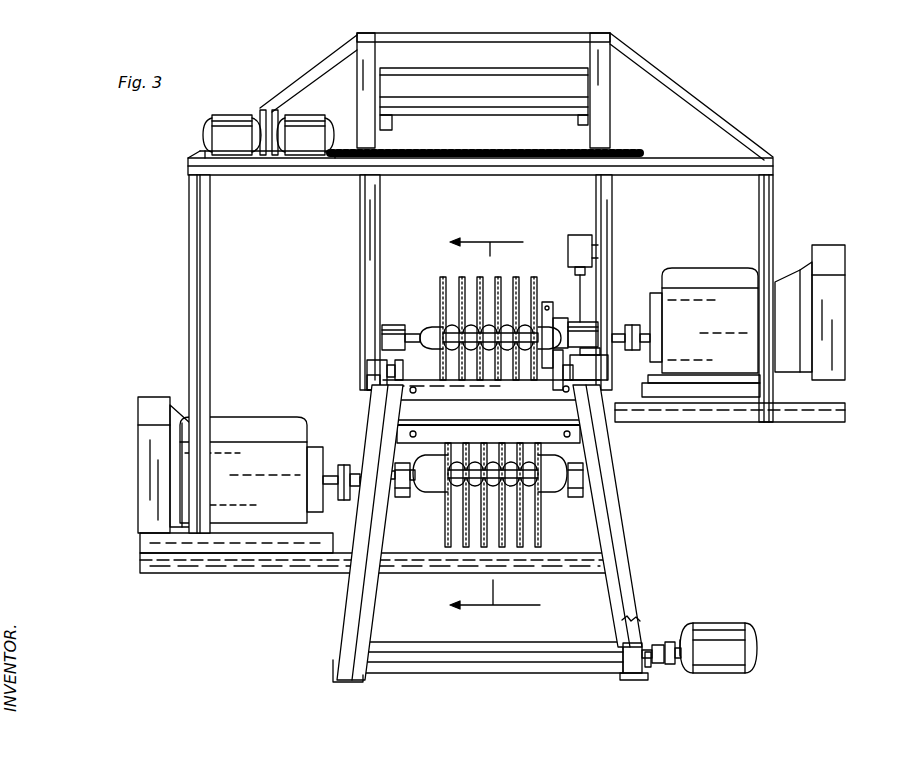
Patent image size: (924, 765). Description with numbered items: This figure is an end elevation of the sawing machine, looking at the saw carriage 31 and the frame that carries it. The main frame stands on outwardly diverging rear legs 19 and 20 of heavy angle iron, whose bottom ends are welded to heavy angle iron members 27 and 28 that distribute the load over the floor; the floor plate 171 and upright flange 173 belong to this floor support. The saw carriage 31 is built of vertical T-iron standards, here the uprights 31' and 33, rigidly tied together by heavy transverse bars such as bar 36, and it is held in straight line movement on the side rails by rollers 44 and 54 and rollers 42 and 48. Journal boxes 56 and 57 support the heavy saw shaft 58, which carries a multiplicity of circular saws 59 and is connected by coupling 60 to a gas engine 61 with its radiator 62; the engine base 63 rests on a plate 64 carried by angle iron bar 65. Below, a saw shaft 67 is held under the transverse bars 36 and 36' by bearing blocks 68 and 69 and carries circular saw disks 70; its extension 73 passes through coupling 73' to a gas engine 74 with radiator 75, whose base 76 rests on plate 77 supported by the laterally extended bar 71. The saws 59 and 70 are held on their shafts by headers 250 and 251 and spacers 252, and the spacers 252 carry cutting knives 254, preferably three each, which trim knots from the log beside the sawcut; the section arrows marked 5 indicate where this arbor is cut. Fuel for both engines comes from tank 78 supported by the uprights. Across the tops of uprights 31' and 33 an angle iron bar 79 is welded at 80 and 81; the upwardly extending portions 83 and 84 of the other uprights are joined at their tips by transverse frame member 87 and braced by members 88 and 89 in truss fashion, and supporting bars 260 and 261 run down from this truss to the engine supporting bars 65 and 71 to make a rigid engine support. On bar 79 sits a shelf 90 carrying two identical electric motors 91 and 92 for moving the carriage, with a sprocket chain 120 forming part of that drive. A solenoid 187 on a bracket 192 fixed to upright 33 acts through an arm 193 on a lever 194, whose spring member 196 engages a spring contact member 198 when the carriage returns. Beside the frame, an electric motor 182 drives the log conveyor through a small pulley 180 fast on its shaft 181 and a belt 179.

The tank 78 is at (456, 68).
The transverse frame member 87 is at (527, 32).
The brace member 88 is at (676, 89).
The brace member 89 is at (289, 106).
The upwardly extending portion of upright 83 is at (357, 105).
The upwardly extending portion of upright 84 is at (607, 112).
The electric motor 91 is at (234, 115).
The electric motor 92 is at (318, 115).
The sprocket chain 120 is at (521, 148).
The shelf 90 is at (270, 176).
The weld 80 is at (357, 190).
The angle iron bar 79 is at (492, 170).
The weld 81 is at (602, 178).
The supporting bar 260 is at (771, 212).
The T-iron standard 31' is at (346, 282).
The T-iron standard 33 is at (600, 204).
The solenoid 187 is at (576, 235).
The bracket 192 is at (598, 250).
The arm 193 is at (585, 288).
The circular saws 59 is at (480, 277).
The cutting knives 254 is at (496, 277).
The header 251 is at (550, 312).
The lever 194 is at (582, 310).
The header 250 is at (425, 328).
The journal box 57 is at (392, 325).
The journal box 56 is at (600, 320).
The saw shaft 58 is at (408, 348).
The gas engine 61 is at (730, 282).
The radiator 62 is at (845, 312).
The coupling 60 is at (652, 338).
The saw carriage 31 is at (312, 320).
The roller 44 is at (367, 365).
The roller 54 is at (367, 382).
The roller 48 is at (605, 372).
The roller 42 is at (600, 392).
The transverse bar 36' is at (445, 404).
The spacers 252 is at (460, 352).
The spring member 196 is at (545, 386).
The spring contact member 198 is at (553, 390).
The supporting bar 261 is at (208, 276).
The gas engine 74 is at (265, 442).
The shaft extension 73 is at (344, 468).
The coupling 73' is at (344, 497).
The radiator 75 is at (142, 462).
The engine base 76 is at (268, 533).
The plate 77 is at (240, 562).
The laterally extended bar 71 is at (288, 565).
The rear leg 20 is at (352, 612).
The angle iron member 28 is at (358, 682).
The transverse bar 36 is at (522, 433).
The saw shaft 67 is at (418, 497).
The bearing block 68 is at (404, 500).
The bearing block 69 is at (580, 500).
The circular saw disks 70 is at (520, 548).
The rear leg 19 is at (613, 528).
The angle iron bar 65 is at (690, 402).
The engine base 63 is at (728, 392).
The plate 64 is at (812, 405).
The floor plate 171 is at (626, 682).
The angle iron member 27 is at (648, 680).
The upright flange 173 is at (658, 680).
The belt 179 is at (668, 642).
The motor shaft 181 is at (674, 645).
The electric motor 182 is at (730, 623).
The small pulley 180 is at (678, 658).
The section line 5- 5 is at (495, 426).